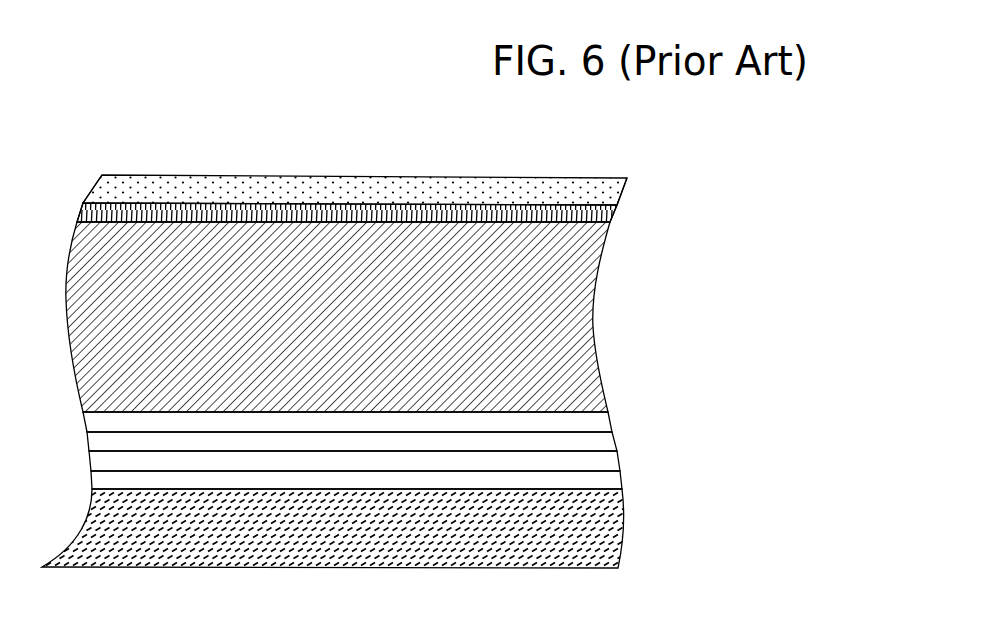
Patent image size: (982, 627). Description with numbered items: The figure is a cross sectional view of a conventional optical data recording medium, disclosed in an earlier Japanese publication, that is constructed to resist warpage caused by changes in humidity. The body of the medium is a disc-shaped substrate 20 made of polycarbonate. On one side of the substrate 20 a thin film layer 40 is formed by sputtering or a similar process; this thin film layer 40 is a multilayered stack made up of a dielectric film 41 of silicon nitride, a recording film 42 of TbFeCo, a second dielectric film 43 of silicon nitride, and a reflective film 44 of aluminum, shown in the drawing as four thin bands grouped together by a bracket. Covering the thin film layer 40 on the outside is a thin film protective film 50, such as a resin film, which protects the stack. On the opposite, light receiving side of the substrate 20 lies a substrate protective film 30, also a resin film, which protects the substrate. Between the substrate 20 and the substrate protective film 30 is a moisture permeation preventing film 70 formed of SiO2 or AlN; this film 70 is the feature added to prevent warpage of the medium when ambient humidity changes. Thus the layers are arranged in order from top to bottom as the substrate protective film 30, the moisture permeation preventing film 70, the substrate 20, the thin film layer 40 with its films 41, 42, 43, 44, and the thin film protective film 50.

The substrate protective film 30 is at (617, 175).
The moisture permeation preventing film 70 is at (613, 213).
The substrate 20 is at (592, 327).
The thin film layer 40 is at (460, 429).
The dielectric film 41 is at (613, 425).
The recording film 42 is at (617, 437).
The dielectric film 43 is at (620, 462).
The reflective film 44 is at (623, 478).
The thin film protective film 50 is at (625, 533).